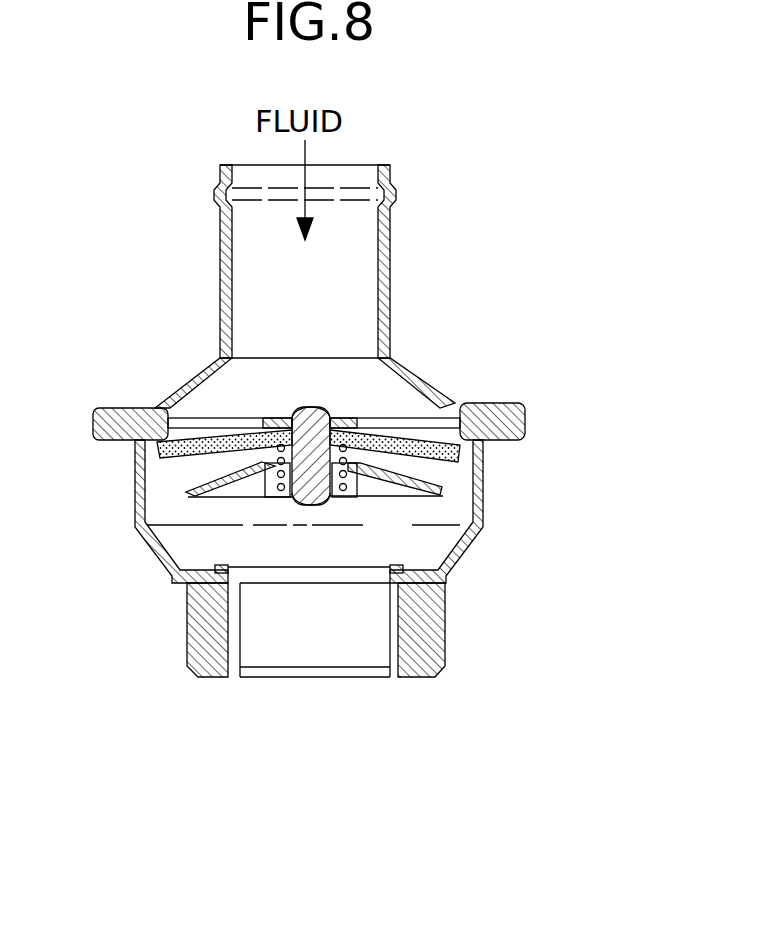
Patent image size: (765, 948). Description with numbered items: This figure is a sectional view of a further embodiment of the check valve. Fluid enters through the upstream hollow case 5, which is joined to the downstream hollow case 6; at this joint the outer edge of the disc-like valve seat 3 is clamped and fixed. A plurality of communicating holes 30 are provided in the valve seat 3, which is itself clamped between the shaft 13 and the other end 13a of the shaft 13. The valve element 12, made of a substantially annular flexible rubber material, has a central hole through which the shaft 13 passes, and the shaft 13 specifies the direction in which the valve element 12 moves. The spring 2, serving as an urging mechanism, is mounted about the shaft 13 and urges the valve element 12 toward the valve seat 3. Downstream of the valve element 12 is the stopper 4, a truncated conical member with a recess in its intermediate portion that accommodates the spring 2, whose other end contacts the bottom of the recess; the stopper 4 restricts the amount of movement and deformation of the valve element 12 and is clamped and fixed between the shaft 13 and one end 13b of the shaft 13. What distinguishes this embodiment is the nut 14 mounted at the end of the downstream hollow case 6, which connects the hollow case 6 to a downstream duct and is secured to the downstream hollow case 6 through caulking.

The spring 2 is at (215, 497).
The valve seat 3 is at (263, 417).
The stopper 4 is at (262, 462).
The upstream hollow case 5 is at (392, 262).
The downstream hollow case 6 is at (487, 468).
The valve element 12 is at (167, 457).
The shaft 13 is at (343, 417).
The other end of the shaft 13a is at (305, 408).
The one end of the shaft 13b is at (327, 505).
The nut 14 is at (447, 647).
The communicating hole 30 is at (452, 395).